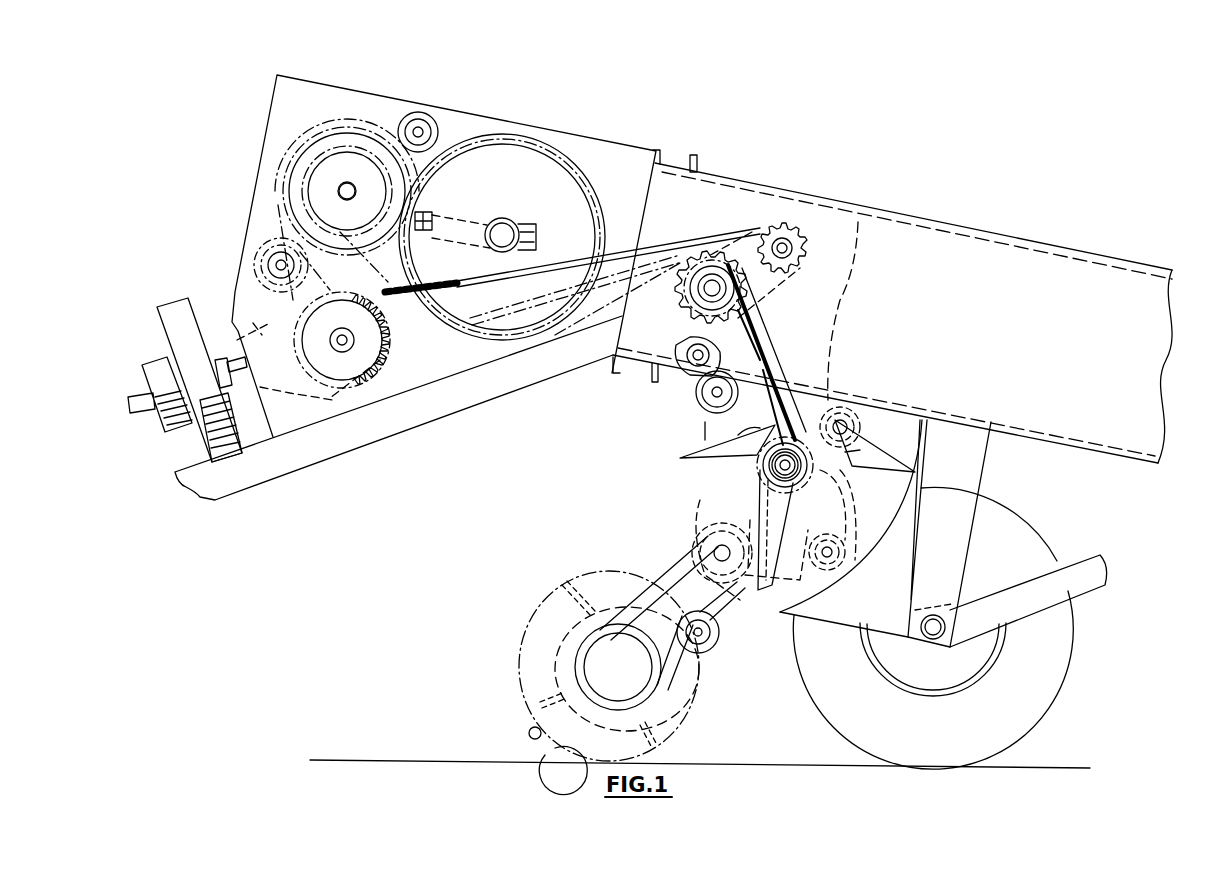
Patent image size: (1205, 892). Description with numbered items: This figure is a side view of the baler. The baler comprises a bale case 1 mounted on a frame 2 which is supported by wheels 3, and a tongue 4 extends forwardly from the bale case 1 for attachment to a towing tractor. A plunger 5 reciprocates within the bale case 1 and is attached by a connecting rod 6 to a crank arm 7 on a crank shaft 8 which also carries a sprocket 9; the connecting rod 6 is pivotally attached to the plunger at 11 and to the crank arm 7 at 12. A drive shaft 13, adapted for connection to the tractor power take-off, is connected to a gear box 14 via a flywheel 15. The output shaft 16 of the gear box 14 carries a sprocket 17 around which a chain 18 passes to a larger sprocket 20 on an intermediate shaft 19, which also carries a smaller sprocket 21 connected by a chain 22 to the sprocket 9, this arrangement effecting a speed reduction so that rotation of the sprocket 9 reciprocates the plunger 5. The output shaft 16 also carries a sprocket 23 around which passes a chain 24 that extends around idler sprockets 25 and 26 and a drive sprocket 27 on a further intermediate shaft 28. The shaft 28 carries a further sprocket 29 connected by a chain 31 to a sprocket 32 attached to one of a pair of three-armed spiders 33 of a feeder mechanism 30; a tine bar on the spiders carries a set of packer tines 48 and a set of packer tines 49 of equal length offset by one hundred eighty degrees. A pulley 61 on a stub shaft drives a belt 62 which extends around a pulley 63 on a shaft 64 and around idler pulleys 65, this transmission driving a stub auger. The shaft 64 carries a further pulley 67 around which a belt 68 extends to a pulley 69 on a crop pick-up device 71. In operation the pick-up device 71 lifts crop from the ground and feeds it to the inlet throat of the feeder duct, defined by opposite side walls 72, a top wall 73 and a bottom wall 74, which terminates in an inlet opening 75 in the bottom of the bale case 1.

The bale case 1 is at (932, 215).
The frame 2 is at (980, 466).
The wheels 3 is at (1050, 705).
The tongue 4 is at (418, 428).
The plunger 5 is at (850, 302).
The connecting rod 6 is at (610, 247).
The crank arm 7 is at (524, 222).
The crank shaft 8 is at (504, 218).
The sprocket 9 is at (588, 197).
The pivot 11 is at (767, 289).
The pivot 12 is at (430, 213).
The drive shaft 13 is at (133, 410).
The gear box 14 is at (268, 330).
The flywheel 15 is at (175, 300).
The output shaft 16 is at (380, 330).
The sprocket 17 is at (300, 352).
The chain 18 is at (300, 292).
The intermediate shaft 19 is at (340, 193).
The sprocket 20 is at (305, 137).
The sprocket 21 is at (345, 152).
The chain 22 is at (382, 148).
The sprocket 23 is at (398, 328).
The chain 24 is at (460, 287).
The idler sprocket 25 is at (800, 242).
The idler sprocket 26 is at (700, 400).
The drive sprocket 27 is at (690, 301).
The intermediate shaft 28 is at (685, 351).
The sprocket 29 is at (762, 315).
The feeder mechanism 30 is at (730, 476).
The chain 31 is at (765, 346).
The sprocket 32 is at (765, 480).
The spiders 33 is at (735, 440).
The packer tines 48 is at (778, 545).
The packer tines 49 is at (800, 490).
The pulley 61 is at (737, 518).
The belt 62 is at (850, 523).
The pulley 63 is at (726, 612).
The shaft 64 is at (714, 548).
The idler pulleys 65 is at (860, 432).
The pulley 67 is at (766, 590).
The belt 68 is at (682, 564).
The pulley 69 is at (642, 648).
The crop pick-up device 71 is at (500, 681).
The side walls 72 is at (844, 586).
The top wall 73 is at (848, 510).
The bottom wall 74 is at (872, 562).
The inlet opening 75 is at (897, 396).